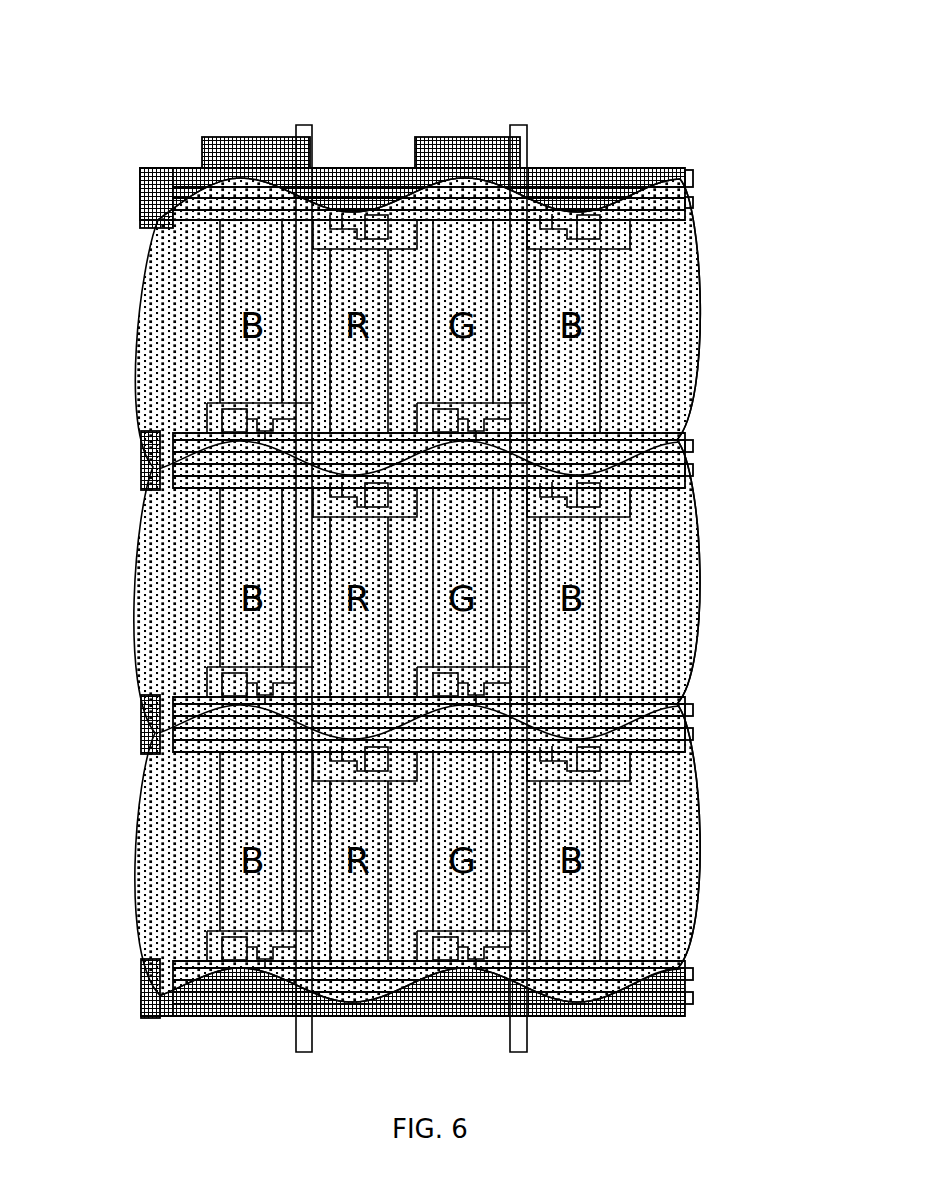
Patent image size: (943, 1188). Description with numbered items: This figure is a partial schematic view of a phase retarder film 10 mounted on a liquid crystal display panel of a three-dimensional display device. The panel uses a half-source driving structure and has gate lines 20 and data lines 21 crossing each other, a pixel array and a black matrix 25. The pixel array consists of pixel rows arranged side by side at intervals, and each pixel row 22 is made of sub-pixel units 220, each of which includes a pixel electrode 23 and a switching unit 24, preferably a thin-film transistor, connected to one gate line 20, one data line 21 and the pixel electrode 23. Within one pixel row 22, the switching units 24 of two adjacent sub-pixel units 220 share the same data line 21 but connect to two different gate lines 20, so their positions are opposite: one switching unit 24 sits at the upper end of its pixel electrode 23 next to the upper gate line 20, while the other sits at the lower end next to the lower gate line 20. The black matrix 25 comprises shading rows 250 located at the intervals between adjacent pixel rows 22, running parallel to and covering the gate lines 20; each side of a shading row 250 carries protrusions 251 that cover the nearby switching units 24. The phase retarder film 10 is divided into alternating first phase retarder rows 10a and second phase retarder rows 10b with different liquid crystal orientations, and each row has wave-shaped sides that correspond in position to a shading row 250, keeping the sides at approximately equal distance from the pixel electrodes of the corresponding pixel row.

The phase retarder film 10 is at (700, 487).
The first phase retarder row 10a is at (701, 317).
The second phase retarder row 10b is at (704, 598).
The gate line 20 is at (140, 182).
The data line 21 is at (300, 124).
The pixel row 22 is at (150, 352).
The pixel electrode 23 is at (376, 168).
The switching unit 24 is at (280, 125).
The black matrix 25 is at (416, 111).
The sub-pixel unit 220 is at (297, 107).
The shading row 250 is at (600, 168).
The protrusion 251 is at (467, 112).